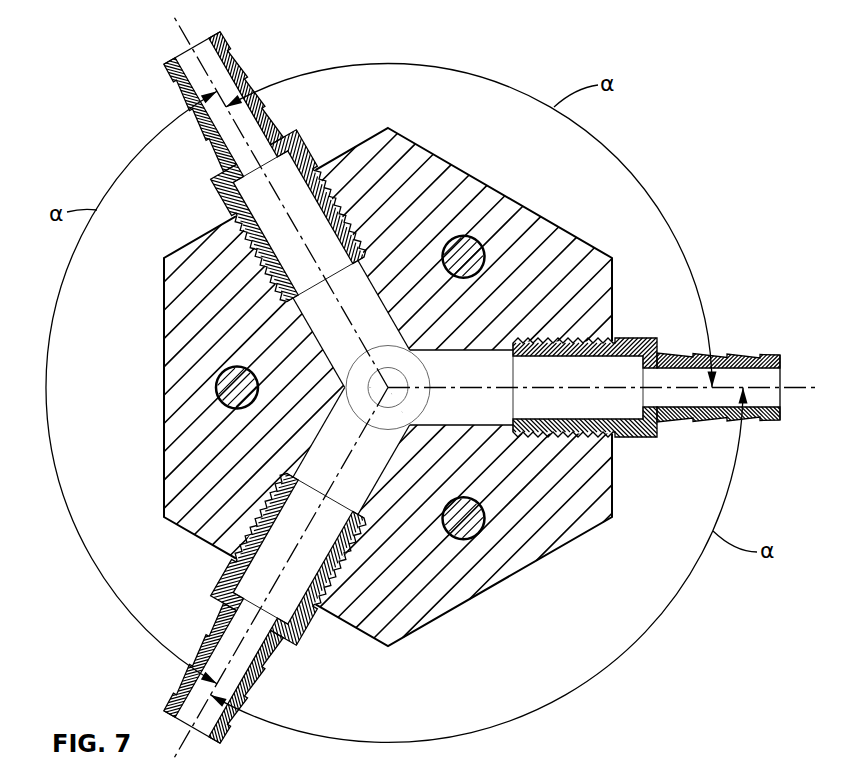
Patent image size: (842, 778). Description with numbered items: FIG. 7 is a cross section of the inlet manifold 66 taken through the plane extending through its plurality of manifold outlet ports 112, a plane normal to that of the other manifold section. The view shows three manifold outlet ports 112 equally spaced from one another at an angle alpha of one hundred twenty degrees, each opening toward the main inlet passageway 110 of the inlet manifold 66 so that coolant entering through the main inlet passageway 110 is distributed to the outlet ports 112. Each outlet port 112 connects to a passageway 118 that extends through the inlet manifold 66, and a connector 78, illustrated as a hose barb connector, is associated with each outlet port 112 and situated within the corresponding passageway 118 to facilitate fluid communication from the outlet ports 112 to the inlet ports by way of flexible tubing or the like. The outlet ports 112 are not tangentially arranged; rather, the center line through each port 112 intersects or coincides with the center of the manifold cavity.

The inlet manifold 66 is at (652, 172).
The connector 78 is at (183, 85).
The main inlet passageway 110 is at (428, 380).
The manifold outlet port 112 is at (344, 387).
The passageway 118 is at (376, 268).